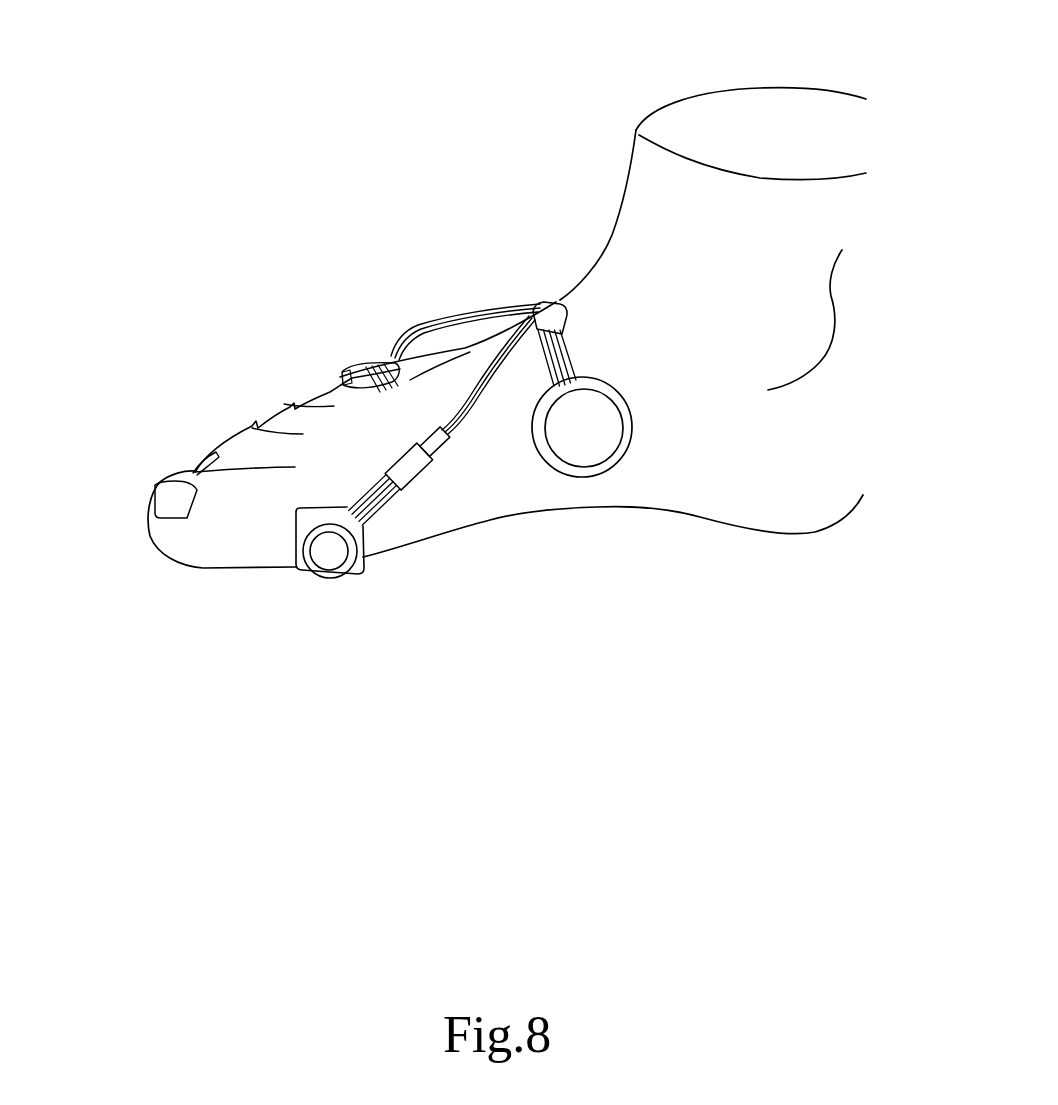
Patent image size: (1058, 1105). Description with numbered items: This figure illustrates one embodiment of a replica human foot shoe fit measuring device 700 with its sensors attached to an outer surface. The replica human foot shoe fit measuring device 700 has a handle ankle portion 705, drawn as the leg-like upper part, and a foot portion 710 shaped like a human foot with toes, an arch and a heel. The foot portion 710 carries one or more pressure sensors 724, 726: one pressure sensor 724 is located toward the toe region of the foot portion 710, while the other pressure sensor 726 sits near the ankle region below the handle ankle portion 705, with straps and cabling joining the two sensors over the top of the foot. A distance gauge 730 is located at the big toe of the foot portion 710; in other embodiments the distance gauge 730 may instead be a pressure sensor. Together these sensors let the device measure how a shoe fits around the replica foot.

The replica human foot shoe fit measuring device 700 is at (471, 147).
The handle ankle portion 705 is at (830, 295).
The foot portion 710 is at (797, 455).
The pressure sensor 724 is at (330, 553).
The pressure sensor 726 is at (578, 443).
The distance gauge 730 is at (155, 492).